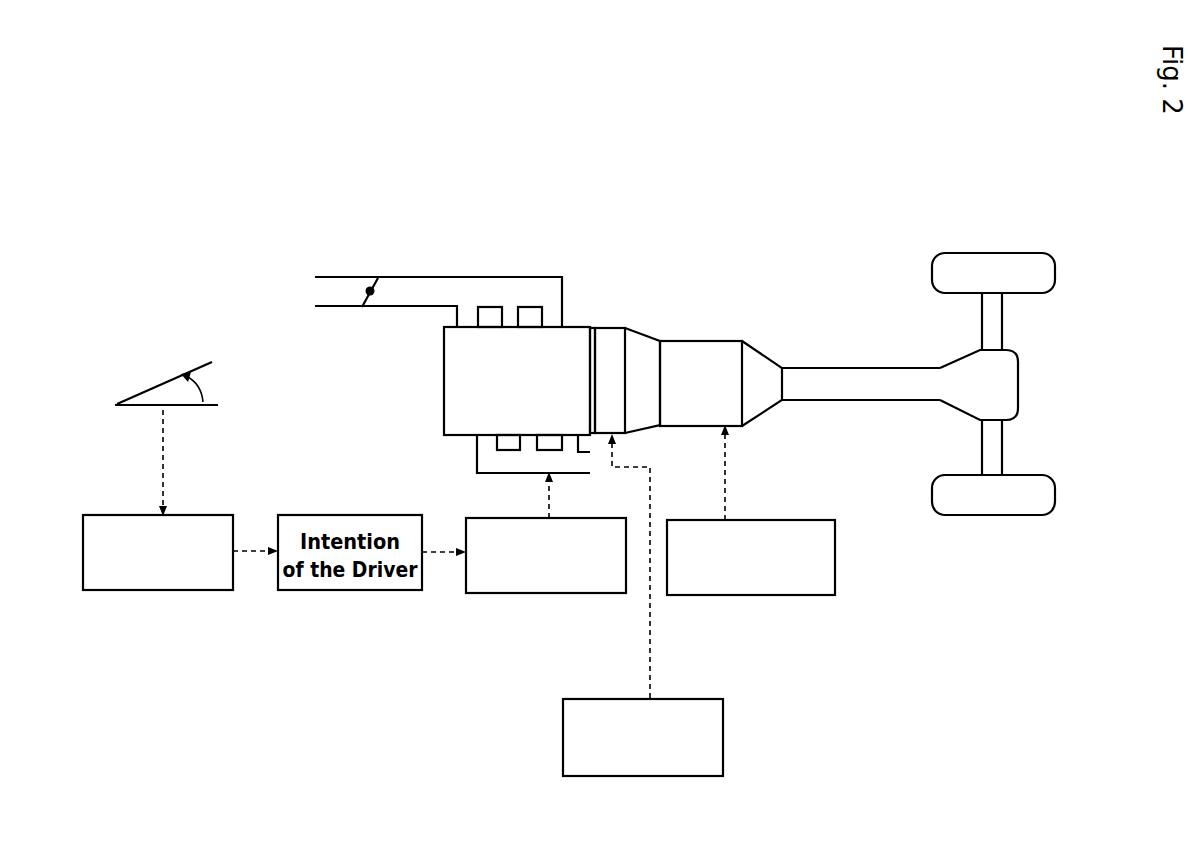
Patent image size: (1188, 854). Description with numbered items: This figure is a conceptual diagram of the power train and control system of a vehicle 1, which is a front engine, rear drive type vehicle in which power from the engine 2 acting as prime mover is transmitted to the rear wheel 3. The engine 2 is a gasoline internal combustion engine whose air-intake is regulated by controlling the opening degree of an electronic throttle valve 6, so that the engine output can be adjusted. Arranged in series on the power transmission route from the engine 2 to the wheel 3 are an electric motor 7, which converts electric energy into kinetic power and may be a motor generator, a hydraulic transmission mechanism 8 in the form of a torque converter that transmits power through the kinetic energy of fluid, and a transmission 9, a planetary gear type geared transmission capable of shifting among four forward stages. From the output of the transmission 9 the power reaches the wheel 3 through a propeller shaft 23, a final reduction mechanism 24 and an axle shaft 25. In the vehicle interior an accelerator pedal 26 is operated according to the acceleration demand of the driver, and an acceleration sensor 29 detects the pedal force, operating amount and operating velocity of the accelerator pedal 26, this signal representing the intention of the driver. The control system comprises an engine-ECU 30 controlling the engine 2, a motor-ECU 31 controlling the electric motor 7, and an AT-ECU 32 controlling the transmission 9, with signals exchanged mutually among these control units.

The vehicle 1 is at (816, 180).
The engine 2 is at (566, 347).
The rear wheel 3 is at (990, 263).
The electronic throttle valve 6 is at (369, 287).
The electric motor 7 is at (613, 348).
The hydraulic transmission mechanism 8 is at (644, 360).
The transmission 9 is at (713, 360).
The propeller shaft 23 is at (863, 378).
The final reduction mechanism 24 is at (997, 385).
The axle shaft 25 is at (995, 323).
The accelerator pedal 26 is at (165, 380).
The acceleration sensor 29 is at (163, 590).
The engine-ECU 30 is at (545, 597).
The motor-ECU 31 is at (723, 738).
The AT-ECU 32 is at (752, 597).